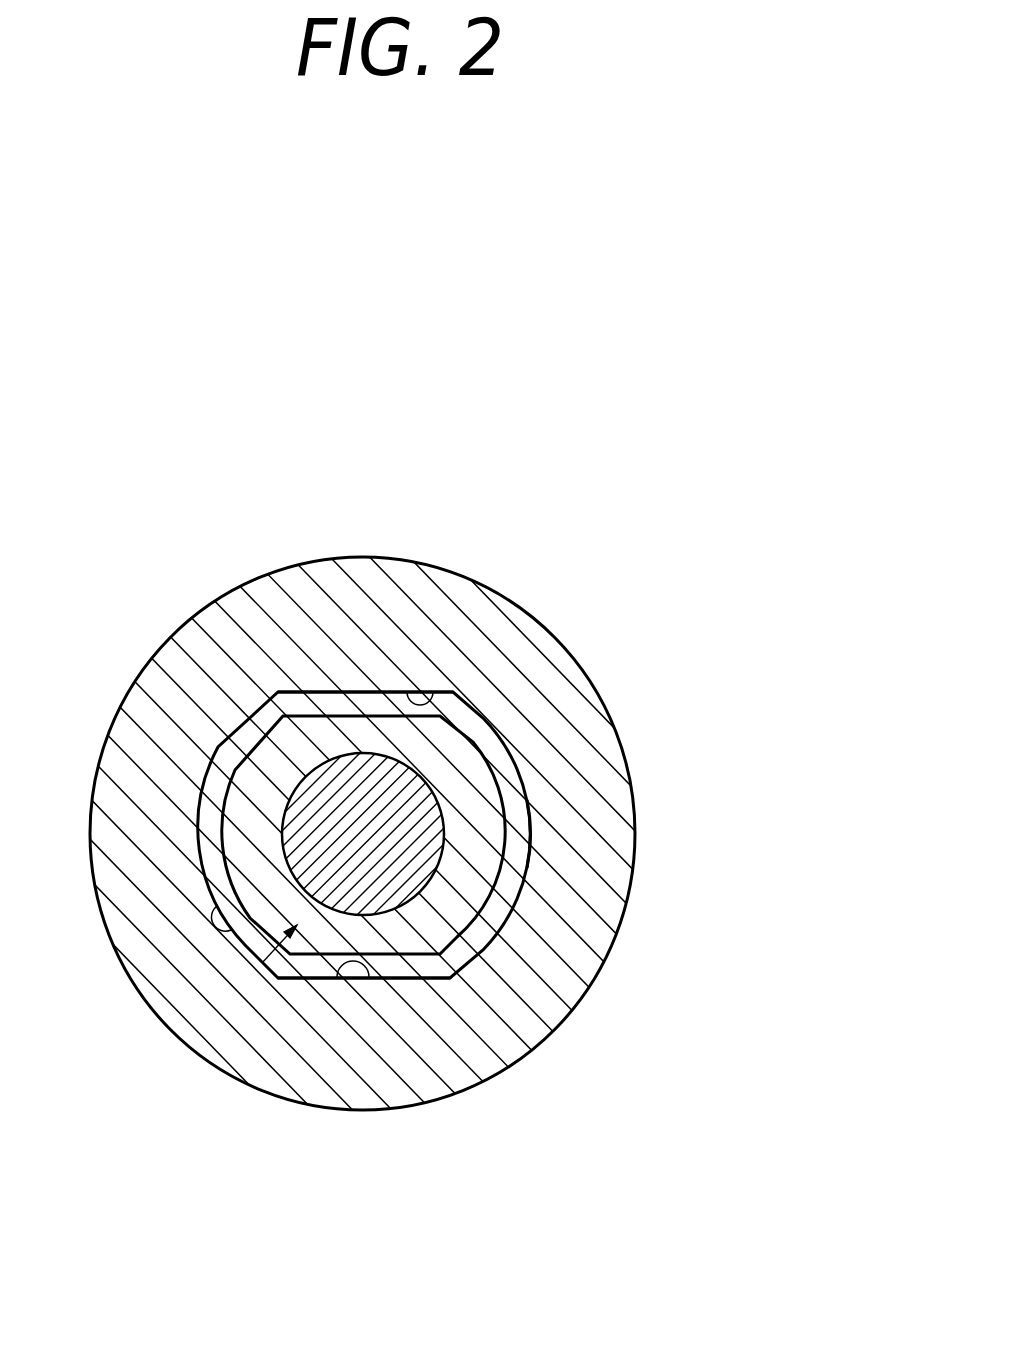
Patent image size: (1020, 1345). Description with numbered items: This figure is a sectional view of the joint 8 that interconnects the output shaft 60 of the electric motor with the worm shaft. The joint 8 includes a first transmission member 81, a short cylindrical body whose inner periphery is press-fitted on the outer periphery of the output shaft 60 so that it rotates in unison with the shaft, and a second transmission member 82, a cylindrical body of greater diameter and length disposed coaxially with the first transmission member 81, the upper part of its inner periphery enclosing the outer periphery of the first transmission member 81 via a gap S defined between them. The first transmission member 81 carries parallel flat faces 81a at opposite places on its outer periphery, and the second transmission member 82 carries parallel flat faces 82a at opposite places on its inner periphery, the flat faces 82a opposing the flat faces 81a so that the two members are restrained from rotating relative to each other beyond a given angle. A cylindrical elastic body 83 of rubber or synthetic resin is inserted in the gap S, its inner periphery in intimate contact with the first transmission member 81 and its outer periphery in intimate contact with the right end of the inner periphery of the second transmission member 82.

The joint 8 is at (638, 578).
The output shaft 60 is at (349, 793).
The first transmission member 81 is at (270, 963).
The flat faces 81a is at (358, 697).
The second transmission member 82 is at (567, 740).
The flat faces 82a is at (437, 700).
The elastic body 83 is at (517, 847).
The gap S is at (222, 934).